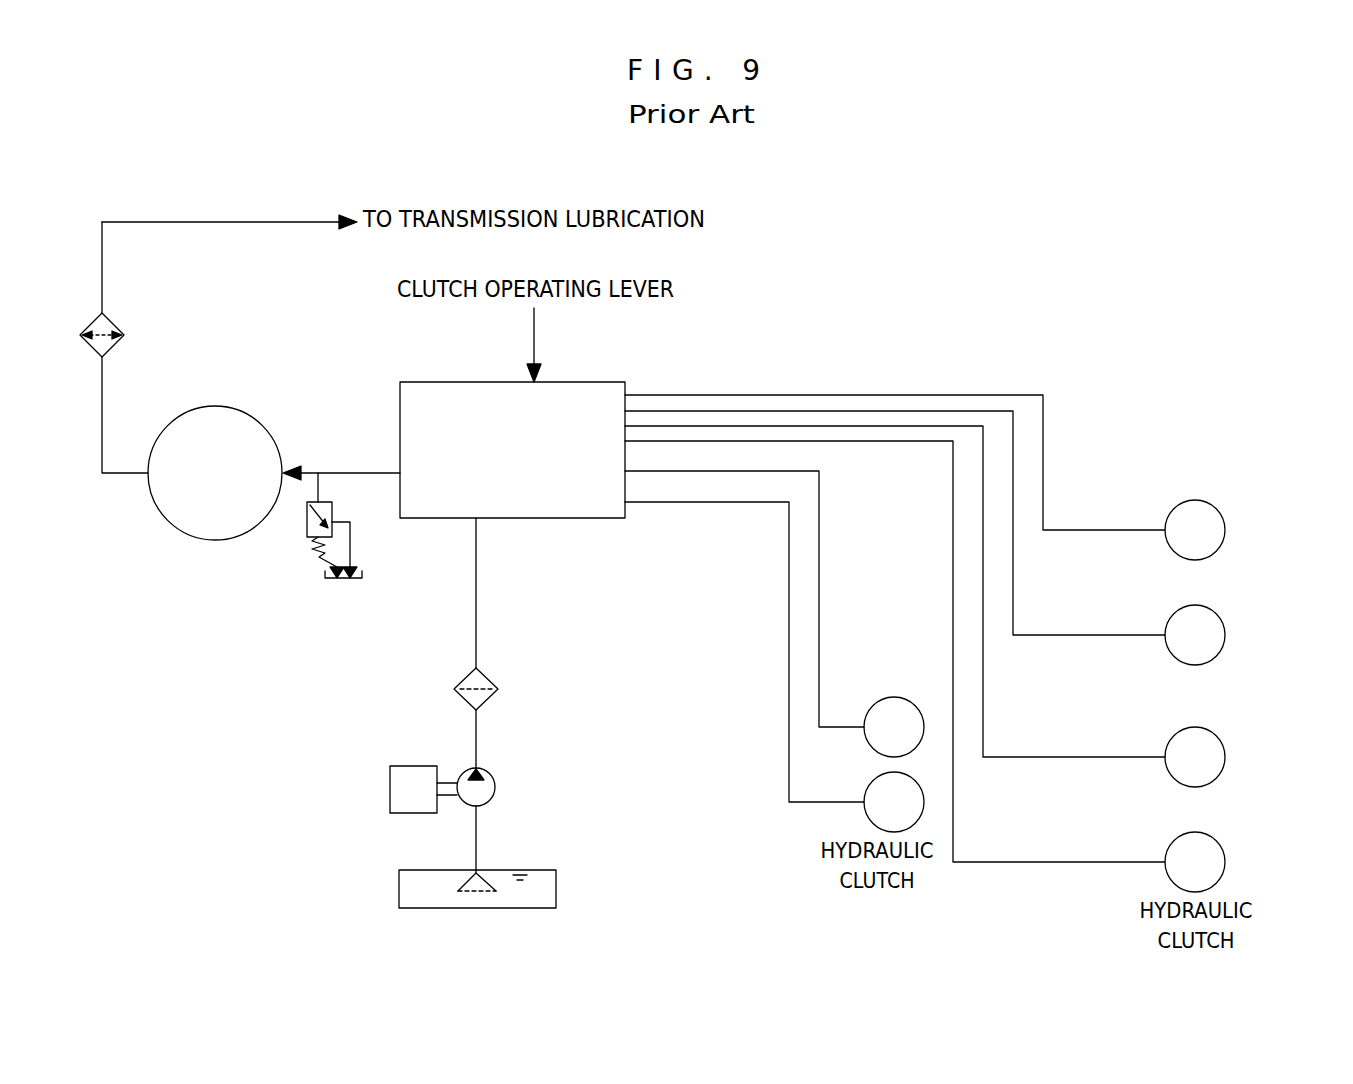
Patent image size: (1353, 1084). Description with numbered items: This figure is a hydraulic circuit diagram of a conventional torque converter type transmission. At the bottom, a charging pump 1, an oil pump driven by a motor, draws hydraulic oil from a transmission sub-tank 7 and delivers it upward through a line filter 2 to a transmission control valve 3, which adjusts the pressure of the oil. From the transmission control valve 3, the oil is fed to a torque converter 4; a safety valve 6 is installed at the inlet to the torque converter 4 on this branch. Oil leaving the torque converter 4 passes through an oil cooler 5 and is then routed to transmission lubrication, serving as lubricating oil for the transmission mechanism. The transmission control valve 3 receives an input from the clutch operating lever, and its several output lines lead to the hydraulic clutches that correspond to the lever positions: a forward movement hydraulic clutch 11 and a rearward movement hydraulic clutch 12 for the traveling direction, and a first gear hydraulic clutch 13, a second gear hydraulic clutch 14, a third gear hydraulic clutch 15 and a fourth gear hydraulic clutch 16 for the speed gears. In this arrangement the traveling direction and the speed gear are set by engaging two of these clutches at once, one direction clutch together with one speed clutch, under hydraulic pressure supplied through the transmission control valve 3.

The charging pump 1 is at (503, 792).
The line filter 2 is at (455, 688).
The transmission control valve 3 is at (557, 508).
The torque converter 4 is at (218, 540).
The oil cooler 5 is at (113, 324).
The safety valve 6 is at (305, 520).
The transmission sub-tank 7 is at (557, 887).
The forward movement hydraulic clutch 11 is at (863, 793).
The rearward movement hydraulic clutch 12 is at (890, 697).
The 1st gear hydraulic clutch 13 is at (1228, 530).
The 2nd gear hydraulic clutch 14 is at (1228, 635).
The 3rd gear hydraulic clutch 15 is at (1228, 862).
The 4th gear hydraulic clutch 16 is at (1228, 757).